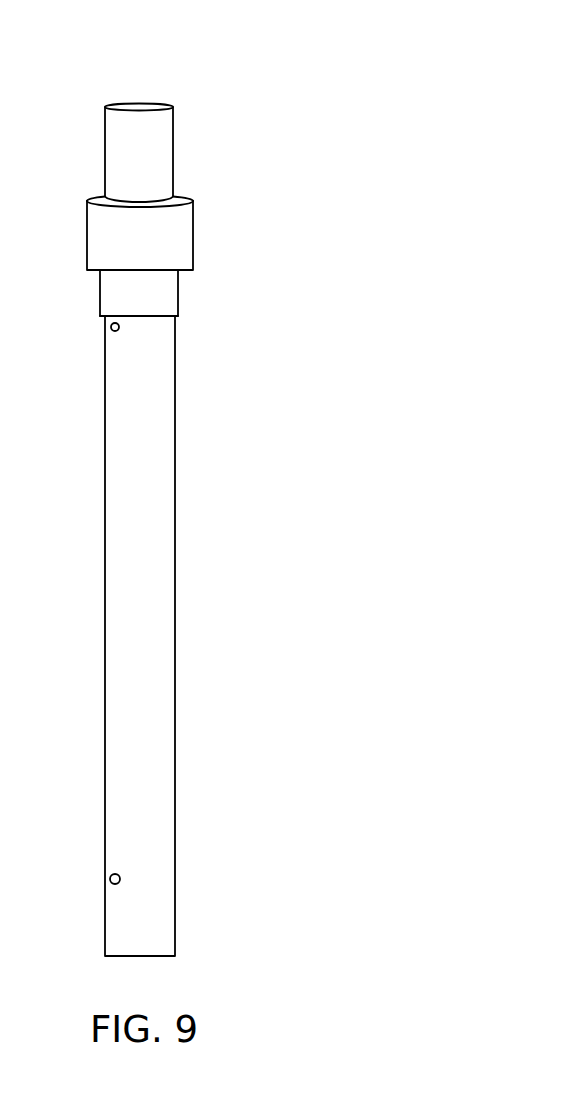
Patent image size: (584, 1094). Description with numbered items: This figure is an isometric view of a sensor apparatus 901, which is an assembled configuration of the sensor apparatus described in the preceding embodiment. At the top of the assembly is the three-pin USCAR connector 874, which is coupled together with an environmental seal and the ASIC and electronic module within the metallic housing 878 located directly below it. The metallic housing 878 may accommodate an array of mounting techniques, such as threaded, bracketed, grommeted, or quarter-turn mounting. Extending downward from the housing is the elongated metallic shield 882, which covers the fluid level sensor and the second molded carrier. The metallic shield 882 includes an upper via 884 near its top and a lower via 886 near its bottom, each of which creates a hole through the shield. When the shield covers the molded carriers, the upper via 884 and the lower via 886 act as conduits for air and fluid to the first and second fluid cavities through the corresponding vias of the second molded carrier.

The sensor apparatus 901 is at (500, 118).
The 3-pin USCAR 120 connector 874 is at (257, 160).
The metallic housing 878 is at (169, 252).
The metallic shield 882 is at (161, 592).
The upper via 884 is at (105, 339).
The lower via 886 is at (102, 871).